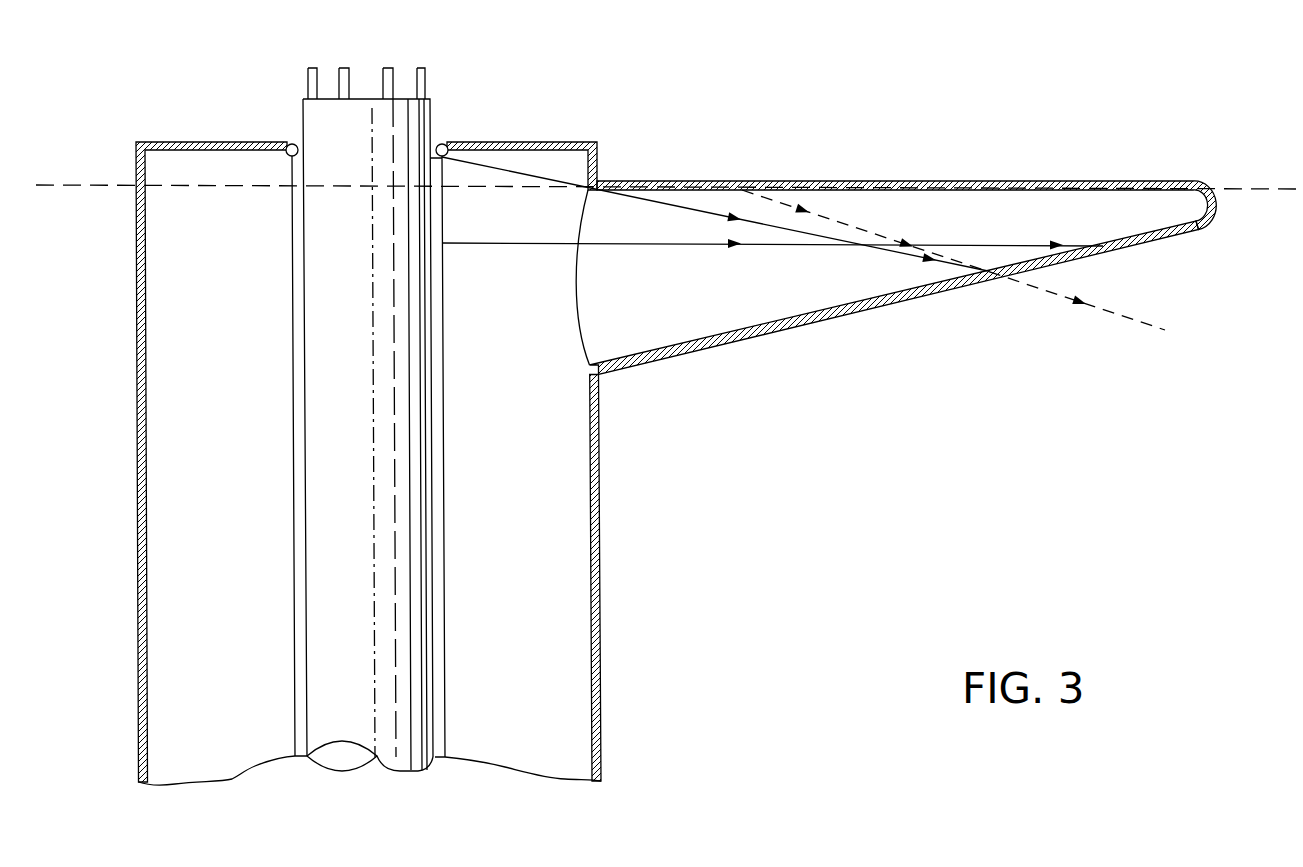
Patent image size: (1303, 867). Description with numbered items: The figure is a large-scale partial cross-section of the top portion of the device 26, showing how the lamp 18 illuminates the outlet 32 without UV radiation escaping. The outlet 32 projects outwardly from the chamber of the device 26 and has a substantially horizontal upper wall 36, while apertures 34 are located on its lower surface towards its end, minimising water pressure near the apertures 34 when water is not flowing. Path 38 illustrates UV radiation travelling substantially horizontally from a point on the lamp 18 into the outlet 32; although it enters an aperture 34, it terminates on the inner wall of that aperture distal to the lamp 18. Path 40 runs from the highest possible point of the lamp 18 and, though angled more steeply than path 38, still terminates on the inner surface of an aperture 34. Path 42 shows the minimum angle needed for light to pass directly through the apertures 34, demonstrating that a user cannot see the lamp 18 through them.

The lamp 18 is at (415, 456).
The device 26 is at (667, 630).
The outlet 32 is at (790, 329).
The apertures 34 is at (1100, 250).
The upper wall 36 is at (1004, 182).
The path 38 is at (518, 243).
The path 40 is at (520, 173).
The path 42 is at (888, 236).